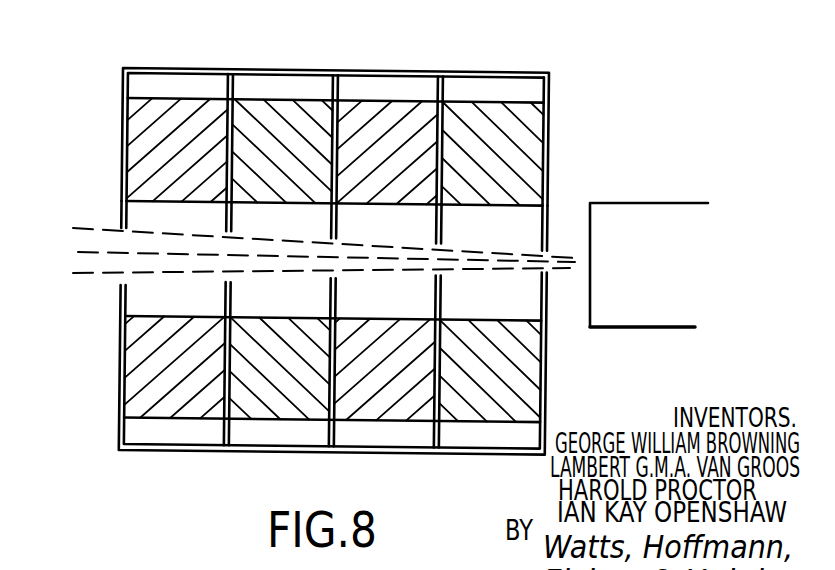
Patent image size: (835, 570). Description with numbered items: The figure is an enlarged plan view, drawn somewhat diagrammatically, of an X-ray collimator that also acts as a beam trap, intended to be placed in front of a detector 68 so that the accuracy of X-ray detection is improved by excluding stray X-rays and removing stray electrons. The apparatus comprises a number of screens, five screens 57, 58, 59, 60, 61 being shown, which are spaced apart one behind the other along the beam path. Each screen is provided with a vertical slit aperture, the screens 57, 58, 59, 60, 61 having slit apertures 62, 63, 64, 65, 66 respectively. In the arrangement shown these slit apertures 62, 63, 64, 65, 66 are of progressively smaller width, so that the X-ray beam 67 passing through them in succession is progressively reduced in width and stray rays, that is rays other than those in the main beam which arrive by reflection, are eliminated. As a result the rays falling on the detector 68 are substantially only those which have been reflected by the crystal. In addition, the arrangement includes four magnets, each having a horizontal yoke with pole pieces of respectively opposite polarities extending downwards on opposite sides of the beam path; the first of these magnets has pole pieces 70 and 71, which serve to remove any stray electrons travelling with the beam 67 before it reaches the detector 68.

The screen 57 is at (123, 122).
The screen 58 is at (226, 123).
The screen 59 is at (331, 122).
The screen 60 is at (438, 88).
The screen 61 is at (544, 98).
The vertical slit aperture 62 is at (143, 216).
The vertical slit aperture 63 is at (231, 233).
The vertical slit aperture 64 is at (331, 247).
The vertical slit aperture 65 is at (444, 247).
The vertical slit aperture 66 is at (547, 256).
The X-ray beam 67 is at (65, 252).
The detector 68 is at (688, 294).
The pole piece 70 is at (165, 413).
The pole piece 71 is at (147, 112).